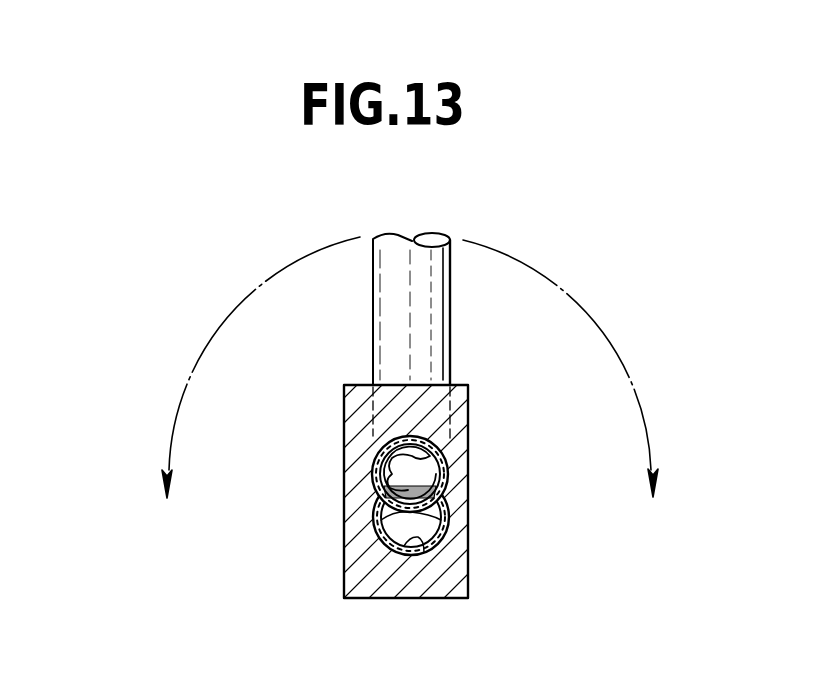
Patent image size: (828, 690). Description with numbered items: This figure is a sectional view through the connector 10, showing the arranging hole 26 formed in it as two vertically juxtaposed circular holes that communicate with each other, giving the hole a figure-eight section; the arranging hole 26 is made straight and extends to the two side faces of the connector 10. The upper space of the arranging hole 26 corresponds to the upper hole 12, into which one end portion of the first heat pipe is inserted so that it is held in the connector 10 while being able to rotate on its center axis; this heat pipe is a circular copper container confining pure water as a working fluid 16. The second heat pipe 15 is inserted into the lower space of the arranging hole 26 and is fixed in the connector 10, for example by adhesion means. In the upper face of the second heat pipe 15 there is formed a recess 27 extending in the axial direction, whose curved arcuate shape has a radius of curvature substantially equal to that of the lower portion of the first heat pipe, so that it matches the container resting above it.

The connector 10 is at (462, 404).
The upper hole 12 is at (468, 433).
The second heat pipe 15 is at (418, 545).
The working fluid 16 is at (374, 480).
The arranging hole 26 is at (372, 527).
The recess 27 is at (437, 545).